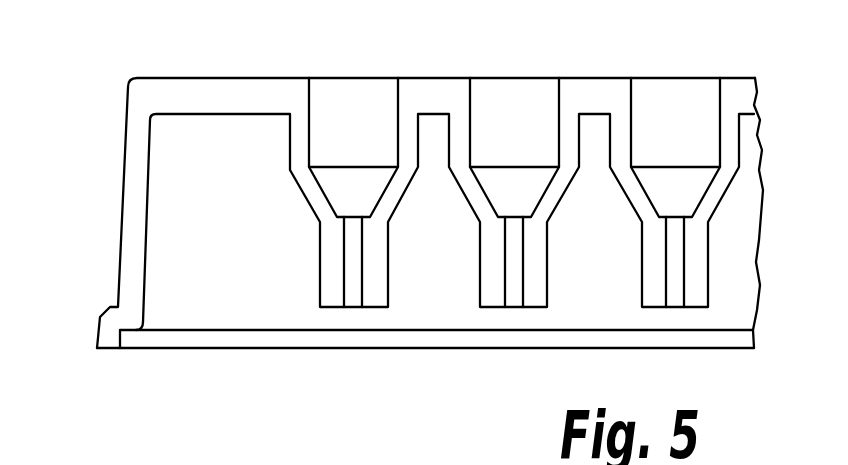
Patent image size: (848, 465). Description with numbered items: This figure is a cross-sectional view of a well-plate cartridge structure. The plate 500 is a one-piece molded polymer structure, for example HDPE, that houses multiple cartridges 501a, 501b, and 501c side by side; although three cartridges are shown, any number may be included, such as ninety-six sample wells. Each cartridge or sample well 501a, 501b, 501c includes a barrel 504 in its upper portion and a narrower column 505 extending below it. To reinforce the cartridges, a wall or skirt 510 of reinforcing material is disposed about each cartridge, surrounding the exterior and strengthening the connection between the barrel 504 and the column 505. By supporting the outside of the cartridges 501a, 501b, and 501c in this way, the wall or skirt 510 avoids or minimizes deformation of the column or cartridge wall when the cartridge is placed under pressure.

The plate 500 is at (212, 297).
The wall or skirt 510 is at (131, 193).
The cartridge 501a is at (357, 103).
The cartridge 501b is at (513, 103).
The cartridge 501c is at (677, 103).
The barrel 504 is at (356, 187).
The column 505 is at (355, 283).